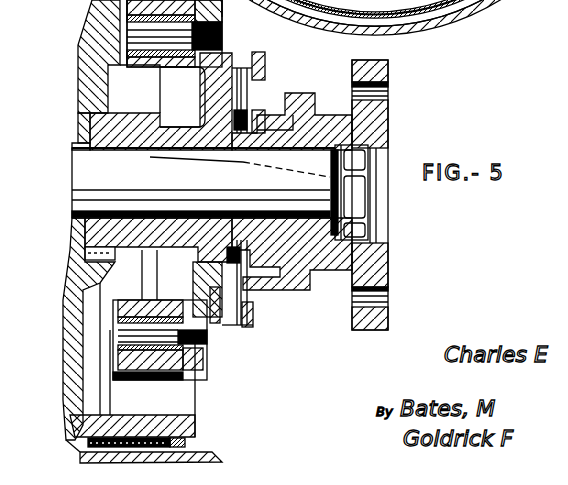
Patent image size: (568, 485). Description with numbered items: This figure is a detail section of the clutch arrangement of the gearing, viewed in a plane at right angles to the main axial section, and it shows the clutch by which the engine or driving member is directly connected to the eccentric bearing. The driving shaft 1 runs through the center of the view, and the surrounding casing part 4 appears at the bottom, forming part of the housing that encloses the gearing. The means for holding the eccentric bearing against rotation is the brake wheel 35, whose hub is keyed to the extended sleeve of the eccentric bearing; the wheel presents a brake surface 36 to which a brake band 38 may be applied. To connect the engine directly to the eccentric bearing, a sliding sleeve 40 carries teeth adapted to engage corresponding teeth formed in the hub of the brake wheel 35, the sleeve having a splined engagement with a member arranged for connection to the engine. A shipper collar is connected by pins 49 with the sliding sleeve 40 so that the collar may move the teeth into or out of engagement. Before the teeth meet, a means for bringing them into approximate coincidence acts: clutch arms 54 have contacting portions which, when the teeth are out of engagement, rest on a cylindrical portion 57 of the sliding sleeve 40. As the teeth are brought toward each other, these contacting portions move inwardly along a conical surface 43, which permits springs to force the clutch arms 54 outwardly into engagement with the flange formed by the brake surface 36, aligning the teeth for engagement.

The shaft 1 is at (220, 192).
The casing part 4 is at (222, 458).
The brake wheel 35 is at (72, 272).
The brake surface 36 is at (188, 431).
The brake band 38 is at (182, 446).
The sliding sleeve 40 is at (124, 247).
The conical surface 43 is at (138, 110).
The pins 49 is at (250, 100).
The clutch arms 54 is at (165, 308).
The cylindrical portion 57 is at (115, 255).